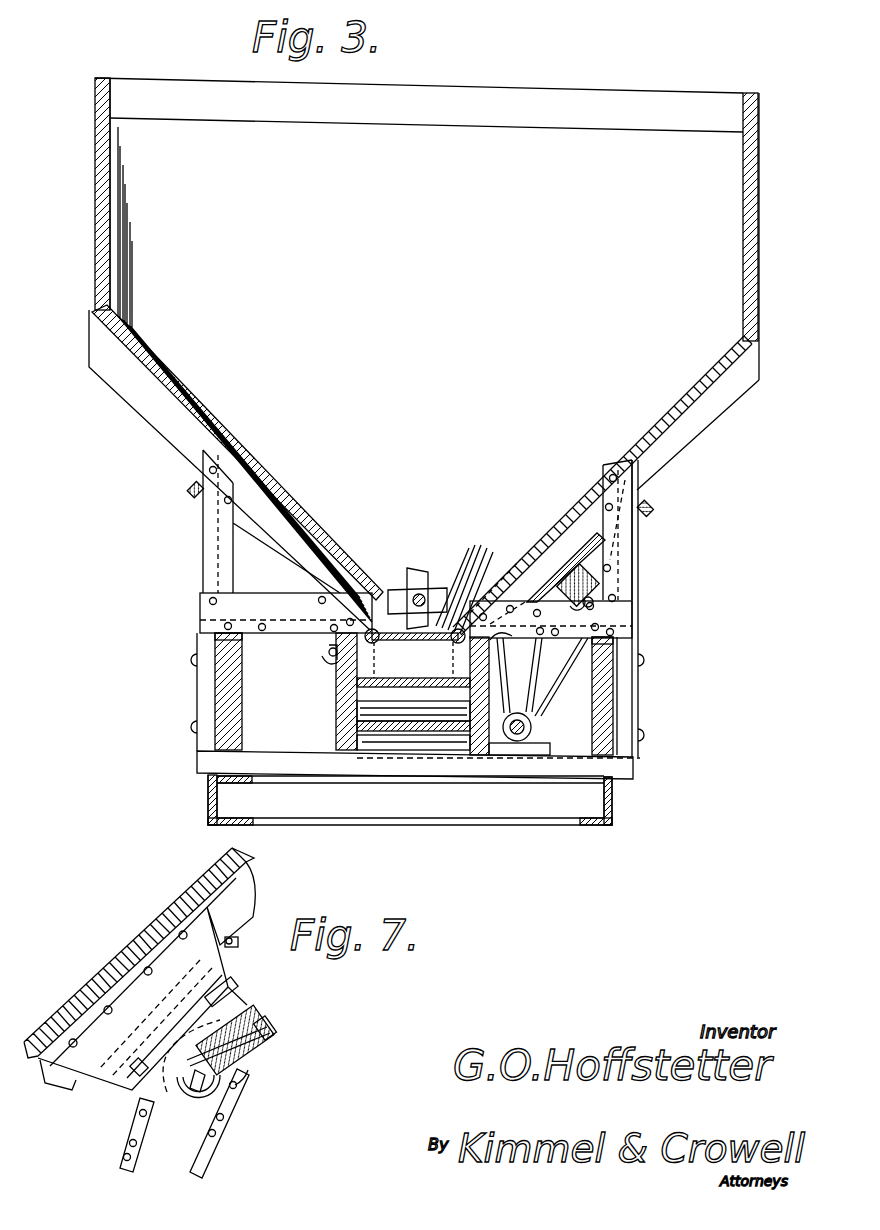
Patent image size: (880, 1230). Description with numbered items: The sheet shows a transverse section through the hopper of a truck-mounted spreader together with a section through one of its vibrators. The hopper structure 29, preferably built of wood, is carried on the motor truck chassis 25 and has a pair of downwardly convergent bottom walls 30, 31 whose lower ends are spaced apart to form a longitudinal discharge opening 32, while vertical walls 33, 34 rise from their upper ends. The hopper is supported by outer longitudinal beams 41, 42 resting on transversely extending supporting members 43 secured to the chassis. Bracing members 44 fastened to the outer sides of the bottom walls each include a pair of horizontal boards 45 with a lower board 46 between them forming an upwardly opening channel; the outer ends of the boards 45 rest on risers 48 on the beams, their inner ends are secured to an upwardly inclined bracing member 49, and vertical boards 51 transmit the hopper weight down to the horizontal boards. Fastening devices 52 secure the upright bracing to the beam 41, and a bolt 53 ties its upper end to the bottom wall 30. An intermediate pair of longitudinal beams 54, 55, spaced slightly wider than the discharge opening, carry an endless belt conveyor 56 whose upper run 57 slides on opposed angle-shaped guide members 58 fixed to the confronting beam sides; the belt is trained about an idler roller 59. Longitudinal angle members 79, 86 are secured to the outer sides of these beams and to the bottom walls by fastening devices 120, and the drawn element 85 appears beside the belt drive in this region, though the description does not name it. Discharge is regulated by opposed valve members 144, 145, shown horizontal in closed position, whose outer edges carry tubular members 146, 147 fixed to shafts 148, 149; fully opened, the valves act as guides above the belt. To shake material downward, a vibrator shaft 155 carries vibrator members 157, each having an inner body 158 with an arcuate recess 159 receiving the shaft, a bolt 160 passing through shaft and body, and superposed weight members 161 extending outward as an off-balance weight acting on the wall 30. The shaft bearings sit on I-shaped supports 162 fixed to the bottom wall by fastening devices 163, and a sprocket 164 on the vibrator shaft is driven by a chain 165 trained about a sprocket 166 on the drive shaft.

In FIG. 3, the motor truck chassis 25 is at (605, 842).
In FIG. 3, the hopper structure 29 is at (654, 147).
In FIG. 3, the bottom wall 30 is at (684, 393).
In FIG. 7, the bottom wall 30 is at (152, 925).
In FIG. 3, the bottom wall 31 is at (178, 412).
In FIG. 3, the discharge opening 32 is at (473, 587).
In FIG. 3, the vertical wall 33 is at (752, 232).
In FIG. 3, the vertical wall 34 is at (95, 251).
In FIG. 3, the longitudinal beam 41 is at (607, 707).
In FIG. 3, the longitudinal beam 42 is at (230, 710).
In FIG. 3, the supporting member 43 is at (615, 773).
In FIG. 3, the bracing member 44 is at (650, 571).
In FIG. 3, the horizontal board 45 is at (595, 622).
In FIG. 3, the lower board 46 is at (561, 677).
In FIG. 3, the riser 48 is at (215, 640).
In FIG. 3, the inclined bracing member 49 is at (690, 437).
In FIG. 3, the vertical board 51 is at (612, 537).
In FIG. 3, the fastening device 52 is at (195, 662).
In FIG. 3, the bolt 53 is at (652, 510).
In FIG. 3, the longitudinal beam 54 is at (485, 760).
In FIG. 3, the longitudinal beam 55 is at (357, 713).
In FIG. 3, the belt conveyor 56 is at (404, 754).
In FIG. 3, the upper run 57 is at (413, 693).
In FIG. 3, the angle-shaped guide member 58 is at (345, 672).
In FIG. 3, the idler roller 59 is at (360, 730).
In FIG. 3, the longitudinal angle member 79 is at (537, 578).
In FIG. 3, the belt 85 is at (539, 682).
In FIG. 3, the longitudinal angle member 86 is at (326, 660).
In FIG. 3, the fastening device 120 is at (377, 541).
In FIG. 3, the valve member 144 is at (455, 580).
In FIG. 3, the valve member 145 is at (376, 620).
In FIG. 3, the tubular member 146 is at (413, 663).
In FIG. 3, the tubular member 147 is at (329, 651).
In FIG. 3, the shaft 148 is at (471, 587).
In FIG. 3, the shaft 149 is at (415, 648).
In FIG. 7, the vibrator shaft 155 is at (197, 1078).
In FIG. 3, the vibrator member 157 is at (578, 575).
In FIG. 7, the vibrator member 157 is at (286, 1042).
In FIG. 7, the inner body 158 is at (250, 1082).
In FIG. 7, the arcuate recess 159 is at (240, 1088).
In FIG. 7, the bolt 160 is at (275, 1027).
In FIG. 7, the weight member 161 is at (280, 1060).
In FIG. 7, the I-shaped support 162 is at (208, 972).
In FIG. 7, the fastening device 163 is at (206, 952).
In FIG. 7, the sprocket 164 is at (223, 1142).
In FIG. 3, the chain 165 is at (598, 592).
In FIG. 7, the chain 165 is at (128, 1125).
In FIG. 3, the sprocket 166 is at (532, 727).